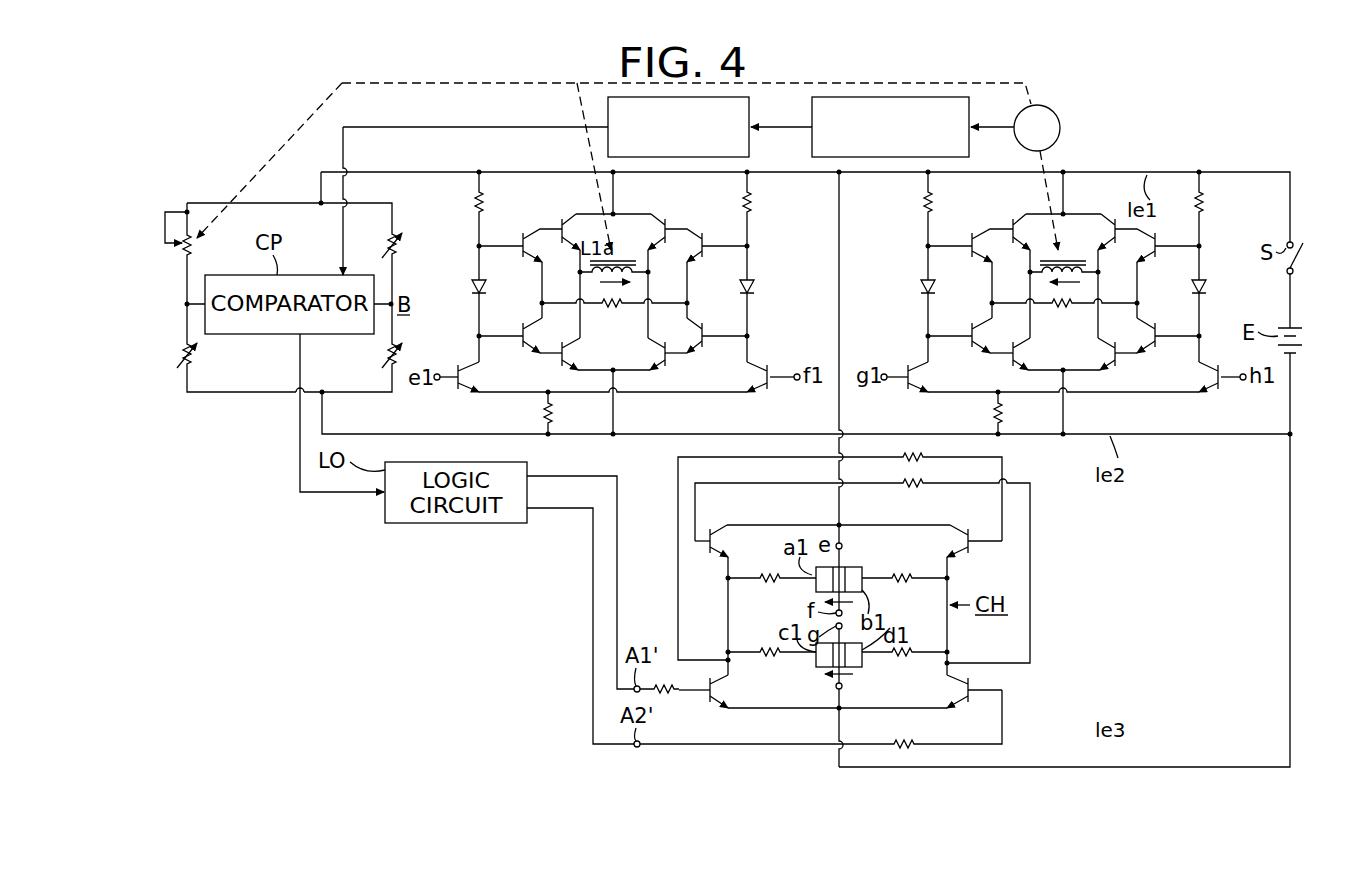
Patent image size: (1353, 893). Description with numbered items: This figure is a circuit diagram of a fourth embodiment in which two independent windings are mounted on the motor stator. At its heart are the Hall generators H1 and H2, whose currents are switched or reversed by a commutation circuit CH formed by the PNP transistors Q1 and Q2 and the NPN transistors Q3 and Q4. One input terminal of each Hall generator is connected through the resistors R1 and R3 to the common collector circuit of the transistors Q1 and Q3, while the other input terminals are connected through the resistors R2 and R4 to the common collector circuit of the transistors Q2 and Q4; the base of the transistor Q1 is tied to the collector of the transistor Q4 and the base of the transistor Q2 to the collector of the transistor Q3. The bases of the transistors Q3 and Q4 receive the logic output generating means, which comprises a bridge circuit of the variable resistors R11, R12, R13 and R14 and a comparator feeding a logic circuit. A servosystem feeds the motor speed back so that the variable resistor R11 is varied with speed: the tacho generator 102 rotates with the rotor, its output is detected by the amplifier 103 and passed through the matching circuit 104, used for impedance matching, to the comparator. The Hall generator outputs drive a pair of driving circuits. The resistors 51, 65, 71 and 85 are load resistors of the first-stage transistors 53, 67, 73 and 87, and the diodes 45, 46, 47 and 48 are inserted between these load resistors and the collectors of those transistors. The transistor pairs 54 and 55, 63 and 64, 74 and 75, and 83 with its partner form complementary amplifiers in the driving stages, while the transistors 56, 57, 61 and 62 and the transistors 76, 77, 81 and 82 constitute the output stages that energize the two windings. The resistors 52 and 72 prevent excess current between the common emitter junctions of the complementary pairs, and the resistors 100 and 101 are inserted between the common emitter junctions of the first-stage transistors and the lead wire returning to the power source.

The diode 45 is at (471, 288).
The diode 46 is at (755, 288).
The diode 47 is at (921, 288).
The diode 48 is at (1207, 290).
The load resistor 51 is at (475, 204).
The resistor 52 is at (614, 318).
The transistor 53 is at (478, 378).
The transistor 54 is at (548, 273).
The transistor 55 is at (548, 332).
The transistor 56 is at (576, 212).
The transistor 57 is at (575, 354).
The transistor 61 is at (652, 236).
The transistor 62 is at (658, 366).
The transistor 63 is at (682, 224).
The transistor 64 is at (695, 333).
The load resistor 65 is at (751, 203).
The transistor 67 is at (758, 378).
The load resistor 71 is at (924, 204).
The resistor 72 is at (1063, 307).
The transistor 73 is at (925, 375).
The transistor 74 is at (998, 273).
The transistor 75 is at (998, 332).
The transistor 76 is at (1026, 214).
The transistor 77 is at (1025, 356).
The transistor 81 is at (1102, 236).
The transistor 82 is at (1115, 366).
The transistor 83 is at (1128, 273).
The load resistor 85 is at (1203, 204).
The transistor 87 is at (1210, 372).
The resistor 100 is at (545, 412).
The resistor 101 is at (994, 412).
The tacho generator 102 is at (1058, 142).
The amplifier 103 is at (812, 115).
The matching circuit 104 is at (608, 108).
The variable resistor R11 is at (200, 241).
The variable resistor R12 is at (195, 357).
The variable resistor R13 is at (412, 251).
The variable resistor R14 is at (384, 357).
The resistor R1 is at (772, 598).
The resistor R2 is at (904, 599).
The resistor R3 is at (772, 672).
The resistor R4 is at (904, 673).
The PNP transistor Q1 is at (730, 540).
The PNP transistor Q2 is at (960, 540).
The NPN transistor Q3 is at (725, 710).
The NPN transistor Q4 is at (948, 707).
The Hall generator H1 is at (856, 567).
The Hall generator H2 is at (856, 667).